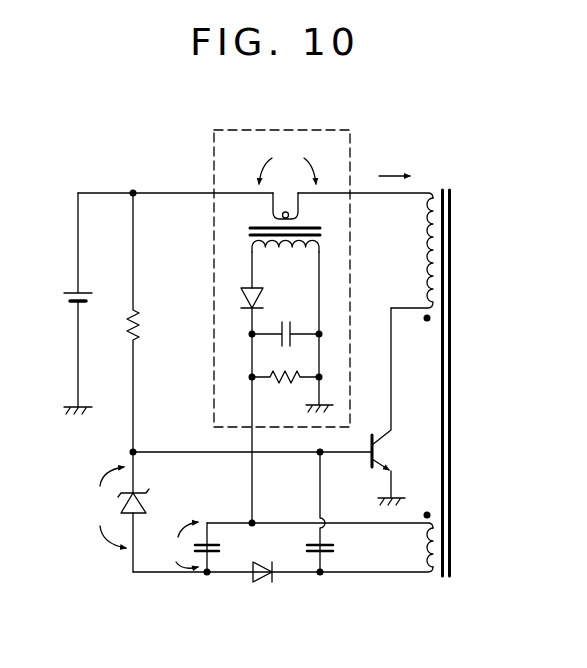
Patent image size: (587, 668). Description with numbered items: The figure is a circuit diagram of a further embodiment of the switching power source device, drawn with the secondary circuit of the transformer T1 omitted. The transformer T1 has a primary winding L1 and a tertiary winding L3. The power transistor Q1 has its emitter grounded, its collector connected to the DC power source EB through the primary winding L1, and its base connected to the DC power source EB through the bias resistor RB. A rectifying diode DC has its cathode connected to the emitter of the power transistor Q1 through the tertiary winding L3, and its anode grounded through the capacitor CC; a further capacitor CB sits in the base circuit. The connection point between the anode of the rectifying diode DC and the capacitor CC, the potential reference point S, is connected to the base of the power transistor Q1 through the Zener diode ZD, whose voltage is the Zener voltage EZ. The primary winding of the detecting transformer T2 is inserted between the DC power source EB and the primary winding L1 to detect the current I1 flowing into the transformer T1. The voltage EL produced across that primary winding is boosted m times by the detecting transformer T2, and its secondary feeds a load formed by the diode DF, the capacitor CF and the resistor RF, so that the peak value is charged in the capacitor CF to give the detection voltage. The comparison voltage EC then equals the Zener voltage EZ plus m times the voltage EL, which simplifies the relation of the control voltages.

The DC power source EB is at (68, 303).
The bias resistor RB is at (117, 322).
The Zener diode ZD is at (151, 512).
The Zener voltage EZ is at (110, 507).
The detecting transformer T2 is at (247, 232).
The voltage produced across the primary winding of the detecting transformer EL is at (287, 168).
The diode DF is at (240, 387).
The capacitor CF is at (286, 317).
The resistor RF is at (291, 335).
The transformer T1 is at (444, 186).
The primary winding L1 is at (410, 260).
The current flowing into the transformer I1 is at (394, 162).
The power transistor Q1 is at (401, 406).
The tertiary winding L3 is at (415, 542).
The capacitor CB is at (337, 554).
The capacitor CC is at (222, 552).
The comparison voltage EC is at (193, 546).
The potential reference point S is at (207, 575).
The rectifying diode DC is at (269, 592).